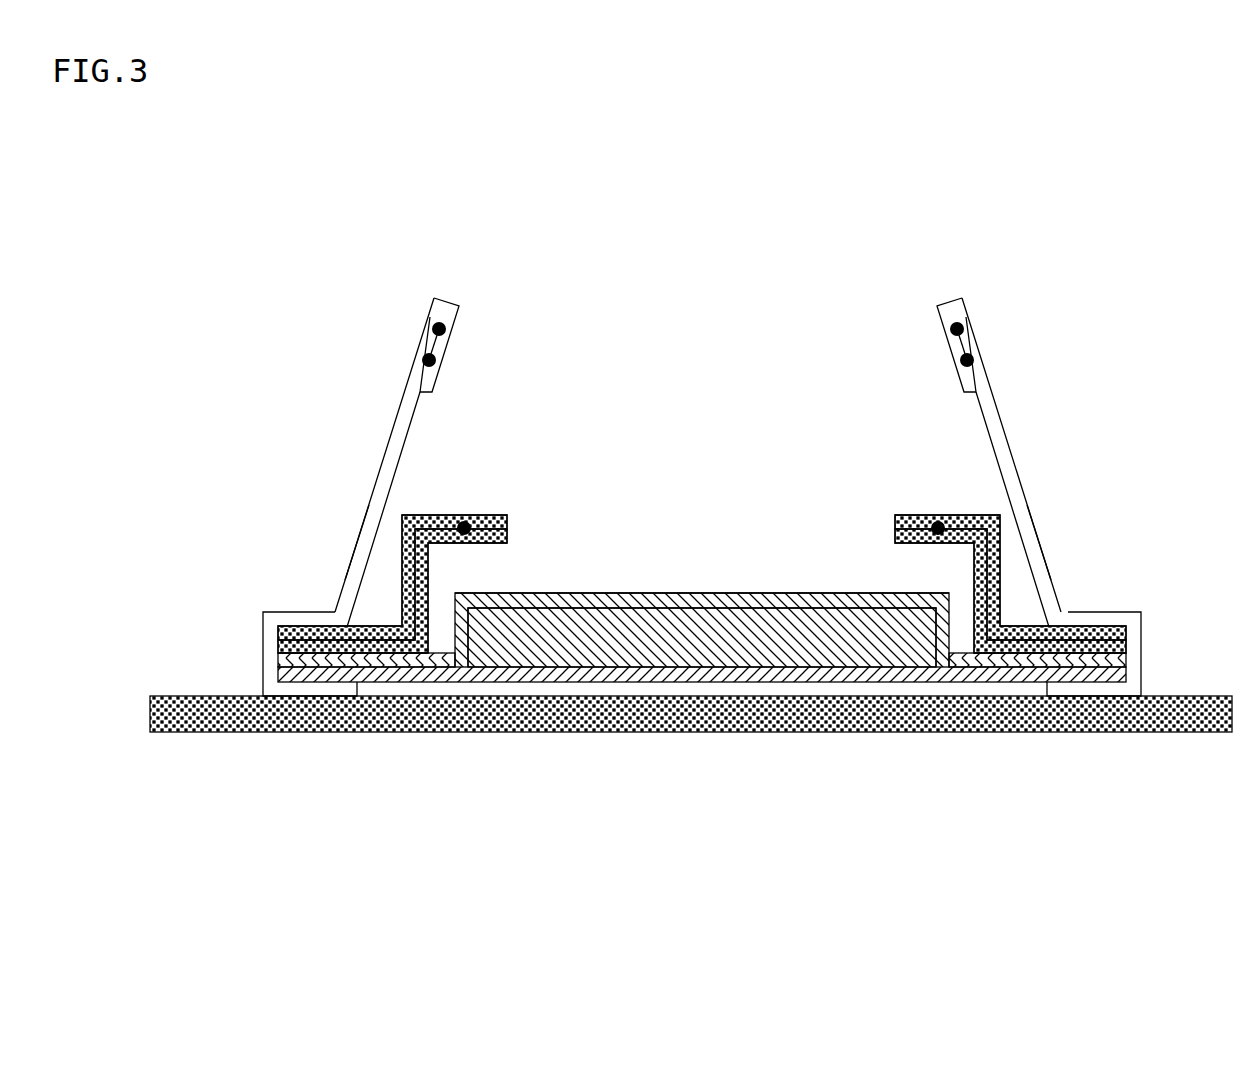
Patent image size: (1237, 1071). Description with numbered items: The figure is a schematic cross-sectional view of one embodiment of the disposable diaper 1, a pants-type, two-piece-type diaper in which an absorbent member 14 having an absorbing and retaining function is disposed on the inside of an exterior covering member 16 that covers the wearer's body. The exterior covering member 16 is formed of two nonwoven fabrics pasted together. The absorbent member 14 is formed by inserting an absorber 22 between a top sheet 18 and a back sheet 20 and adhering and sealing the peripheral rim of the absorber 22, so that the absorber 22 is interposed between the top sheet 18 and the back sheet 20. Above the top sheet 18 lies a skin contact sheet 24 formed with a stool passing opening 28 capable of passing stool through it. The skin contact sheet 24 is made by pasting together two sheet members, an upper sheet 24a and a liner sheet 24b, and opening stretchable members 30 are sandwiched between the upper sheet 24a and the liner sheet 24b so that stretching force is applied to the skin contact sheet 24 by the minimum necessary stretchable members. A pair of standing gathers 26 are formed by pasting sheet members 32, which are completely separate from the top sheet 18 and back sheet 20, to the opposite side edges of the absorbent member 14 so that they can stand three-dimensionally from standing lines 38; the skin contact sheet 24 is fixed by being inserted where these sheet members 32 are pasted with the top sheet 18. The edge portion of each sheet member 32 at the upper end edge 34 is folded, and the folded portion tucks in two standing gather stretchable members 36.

The disposable diaper 1 is at (1079, 191).
The absorbent member 14 is at (702, 717).
The exterior covering member 16 is at (972, 705).
The top sheet 18 is at (467, 633).
The back sheet 20 is at (588, 673).
The absorber 22 is at (528, 648).
The skin contact sheet 24 is at (702, 431).
The upper sheet 24a is at (429, 530).
The liner sheet 24b is at (443, 530).
The standing gathers 26 is at (380, 431).
The stool passing opening 28 is at (715, 516).
The opening stretchable members 30 is at (466, 518).
The sheet members 32 is at (375, 505).
The upper end edge 34 is at (433, 282).
The standing gather stretchable members 36 is at (422, 361).
The standing lines 38 is at (330, 601).